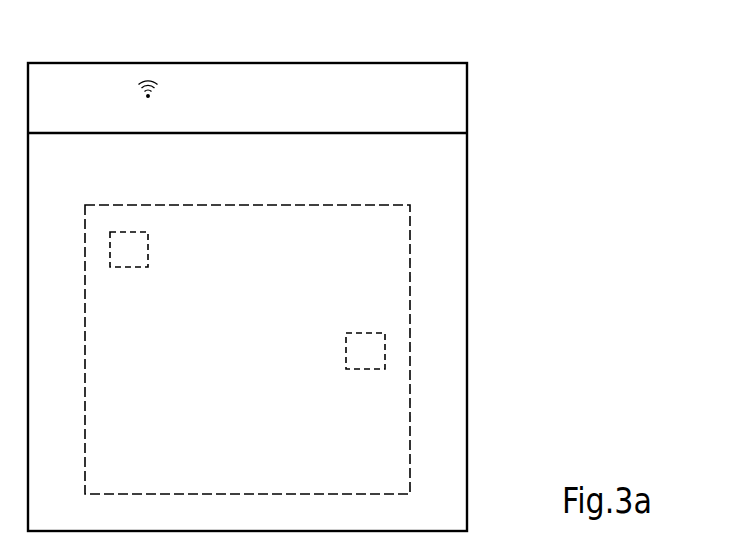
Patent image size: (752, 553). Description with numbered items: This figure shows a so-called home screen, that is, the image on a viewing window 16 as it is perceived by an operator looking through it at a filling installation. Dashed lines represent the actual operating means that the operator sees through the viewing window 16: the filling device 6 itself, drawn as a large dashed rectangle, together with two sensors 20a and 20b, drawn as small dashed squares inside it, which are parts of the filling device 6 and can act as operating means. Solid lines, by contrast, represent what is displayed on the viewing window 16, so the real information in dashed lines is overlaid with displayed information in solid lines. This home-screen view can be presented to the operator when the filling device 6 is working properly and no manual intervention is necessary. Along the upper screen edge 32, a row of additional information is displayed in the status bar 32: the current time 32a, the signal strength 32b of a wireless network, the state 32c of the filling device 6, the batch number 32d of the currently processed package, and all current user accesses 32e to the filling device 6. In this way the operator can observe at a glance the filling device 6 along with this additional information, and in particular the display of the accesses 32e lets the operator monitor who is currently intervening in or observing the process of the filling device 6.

The filling device 6 is at (258, 205).
The viewing window 16 is at (467, 172).
The sensor 20a is at (128, 268).
The sensor 20b is at (367, 333).
The upper screen edge 32 is at (467, 100).
The current time 32a is at (77, 66).
The signal strength of a wireless network 32b is at (143, 68).
The state of the filling device 32c is at (222, 68).
The batch number 32d is at (320, 70).
The current user accesses 32e is at (422, 70).